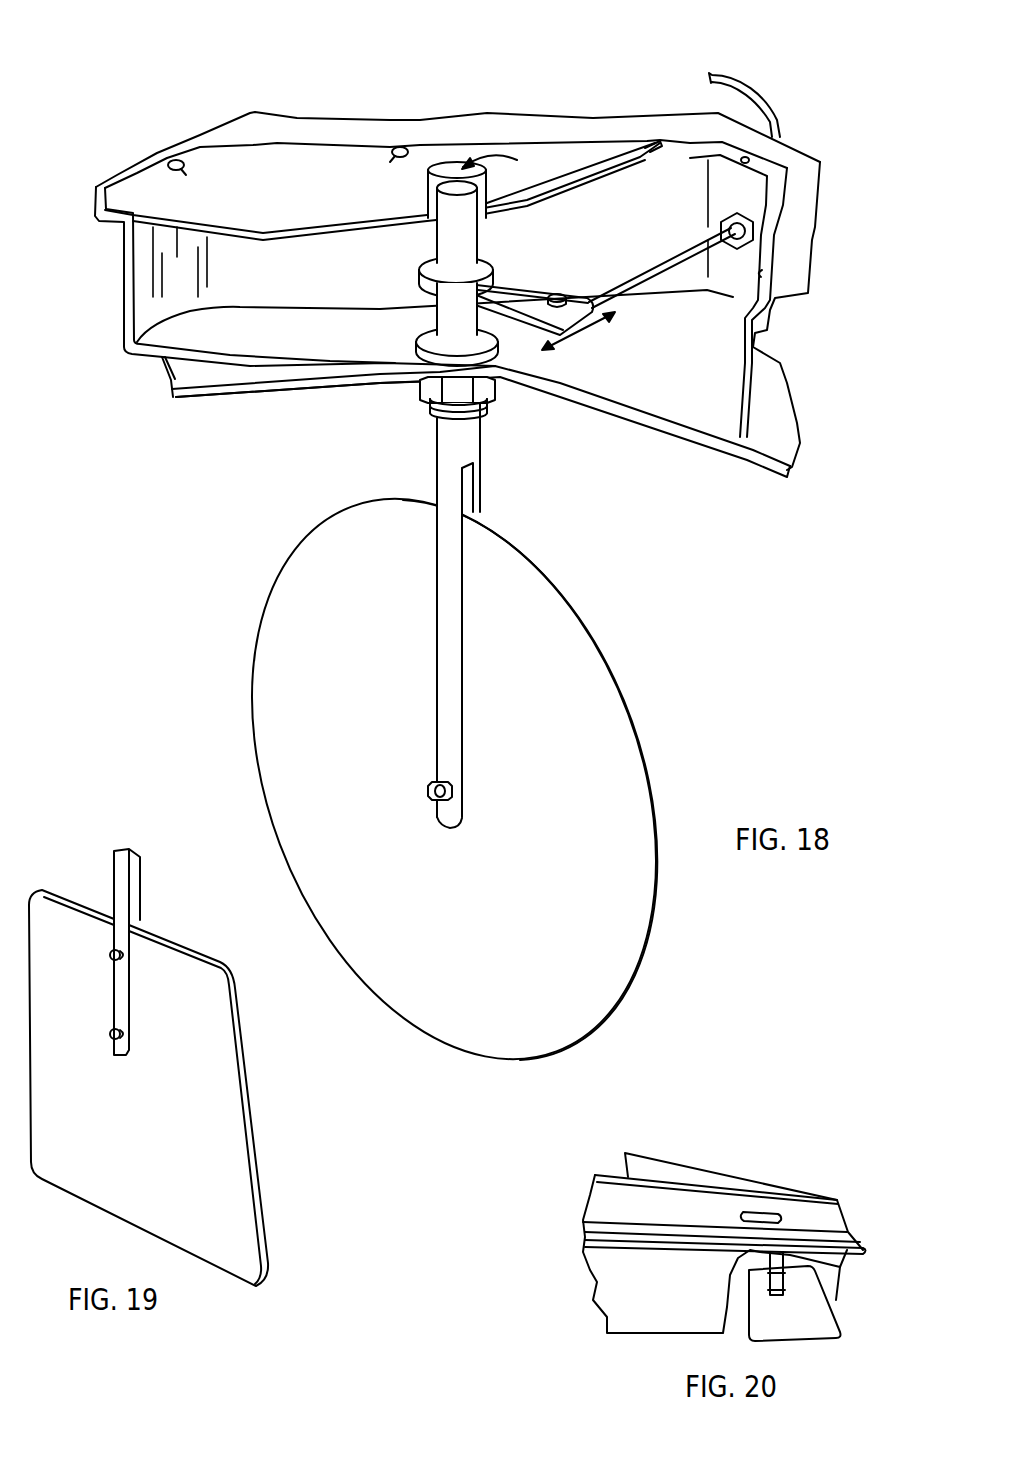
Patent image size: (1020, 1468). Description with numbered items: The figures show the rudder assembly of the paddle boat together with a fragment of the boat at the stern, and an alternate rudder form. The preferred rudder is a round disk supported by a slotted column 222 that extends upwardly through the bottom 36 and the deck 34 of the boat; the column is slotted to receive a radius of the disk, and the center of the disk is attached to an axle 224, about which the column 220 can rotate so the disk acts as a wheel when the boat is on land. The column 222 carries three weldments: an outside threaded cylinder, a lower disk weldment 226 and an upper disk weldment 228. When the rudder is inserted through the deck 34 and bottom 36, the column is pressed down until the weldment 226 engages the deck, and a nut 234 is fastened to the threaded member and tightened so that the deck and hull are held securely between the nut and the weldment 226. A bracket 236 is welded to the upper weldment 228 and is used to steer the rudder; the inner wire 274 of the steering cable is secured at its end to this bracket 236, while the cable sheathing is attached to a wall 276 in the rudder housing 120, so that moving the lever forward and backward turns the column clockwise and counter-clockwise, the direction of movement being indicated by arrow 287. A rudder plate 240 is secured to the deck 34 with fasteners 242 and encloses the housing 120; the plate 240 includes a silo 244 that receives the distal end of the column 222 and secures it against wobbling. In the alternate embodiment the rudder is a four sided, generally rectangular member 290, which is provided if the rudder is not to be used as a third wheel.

In FIG. 18, the deck 34 is at (677, 427).
In FIG. 18, the bottom 36 is at (681, 437).
In FIG. 18, the rudder housing 120 is at (657, 187).
In FIG. 18, the column 220 is at (603, 684).
In FIG. 18, the column 222 is at (474, 446).
In FIG. 18, the axle 224 is at (434, 413).
In FIG. 18, the disk weldment 226 is at (425, 333).
In FIG. 18, the disk weldment 228 is at (425, 285).
In FIG. 18, the nut 234 is at (424, 386).
In FIG. 18, the bracket 236 is at (526, 291).
In FIG. 18, the rudder plate 240 is at (572, 155).
In FIG. 18, the fasteners 242 is at (181, 172).
In FIG. 18, the silo 244 is at (485, 186).
In FIG. 18, the inner wire 274 is at (663, 263).
In FIG. 18, the wall 276 is at (752, 192).
In FIG. 18, the movement direction arrow 287 is at (565, 308).
In FIG. 19, the rectangular rudder member 290 is at (227, 1077).
In FIG. 20, the rectangular rudder member 290 is at (820, 1318).